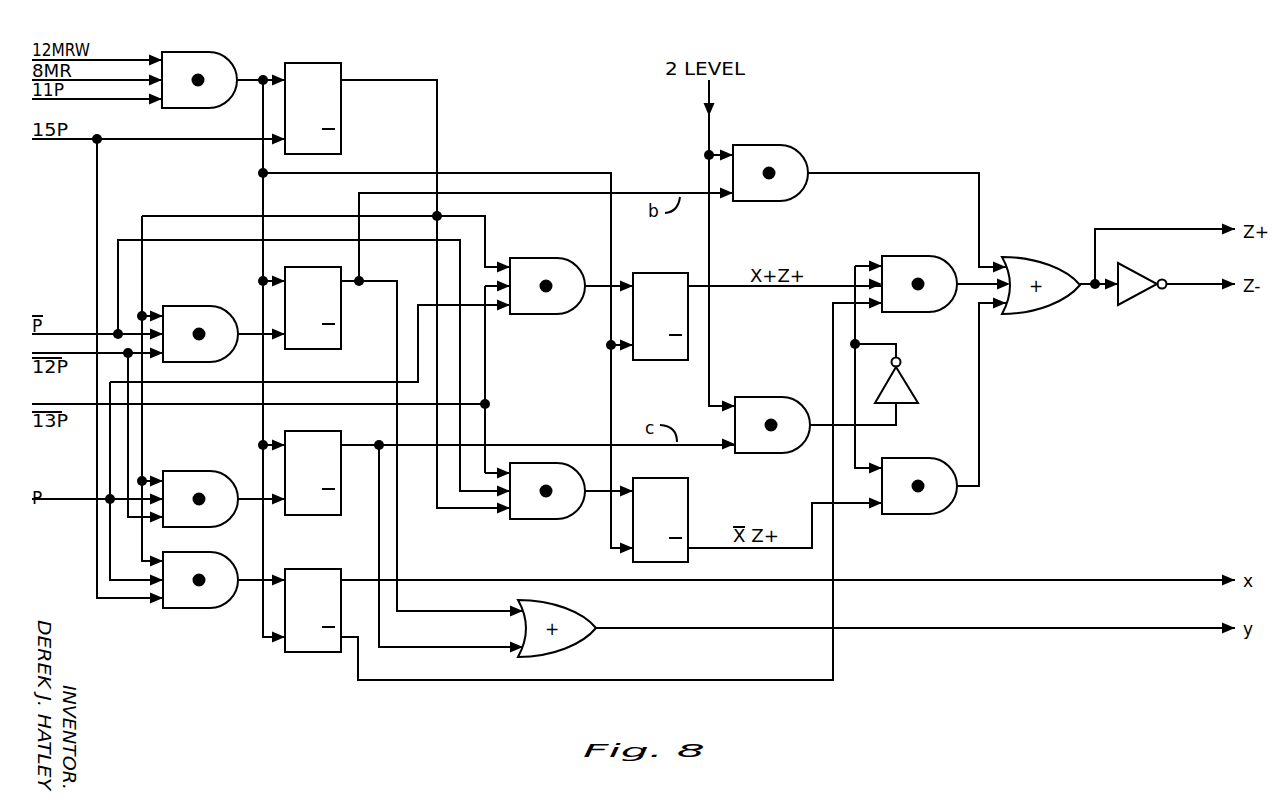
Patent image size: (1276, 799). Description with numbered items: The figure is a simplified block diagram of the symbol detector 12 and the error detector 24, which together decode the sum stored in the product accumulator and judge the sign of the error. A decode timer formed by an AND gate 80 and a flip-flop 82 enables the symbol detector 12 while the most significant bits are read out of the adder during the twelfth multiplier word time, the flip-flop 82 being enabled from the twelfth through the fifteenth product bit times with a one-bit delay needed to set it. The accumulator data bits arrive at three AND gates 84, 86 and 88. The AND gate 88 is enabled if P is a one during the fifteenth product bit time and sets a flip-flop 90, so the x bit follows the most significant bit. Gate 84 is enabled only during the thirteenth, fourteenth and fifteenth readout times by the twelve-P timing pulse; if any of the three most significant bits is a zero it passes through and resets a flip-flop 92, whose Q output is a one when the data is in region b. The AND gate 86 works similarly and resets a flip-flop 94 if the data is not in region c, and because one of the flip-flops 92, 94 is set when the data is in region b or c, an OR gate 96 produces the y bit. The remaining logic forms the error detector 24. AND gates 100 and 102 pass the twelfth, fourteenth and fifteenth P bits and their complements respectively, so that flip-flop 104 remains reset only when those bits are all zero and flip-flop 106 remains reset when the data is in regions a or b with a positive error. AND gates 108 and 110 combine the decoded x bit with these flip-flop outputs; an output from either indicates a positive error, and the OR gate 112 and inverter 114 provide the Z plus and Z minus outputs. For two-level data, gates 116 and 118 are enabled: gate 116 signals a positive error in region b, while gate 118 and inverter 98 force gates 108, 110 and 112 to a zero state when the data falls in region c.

The AND gate 80 is at (215, 52).
The symbol detector 12 is at (323, 58).
The flip-flop 82 is at (341, 127).
The AND gate 84 is at (205, 306).
The flip-flop 92 is at (341, 318).
The AND gate 86 is at (205, 471).
The flip-flop 94 is at (327, 515).
The AND gate 88 is at (205, 609).
The flip-flop 90 is at (327, 652).
The AND gate 100 is at (553, 258).
The AND gate 102 is at (553, 521).
The flip-flop 104 is at (670, 360).
The flip-flop 106 is at (688, 498).
The OR gate 96 is at (580, 640).
The AND gate 116 is at (775, 145).
The error detector 24 is at (876, 163).
The AND gate 118 is at (775, 397).
The inverter 98 is at (906, 373).
The AND gate 108 is at (920, 256).
The AND gate 110 is at (925, 514).
The OR gate 112 is at (1030, 257).
The inverter 114 is at (1135, 296).